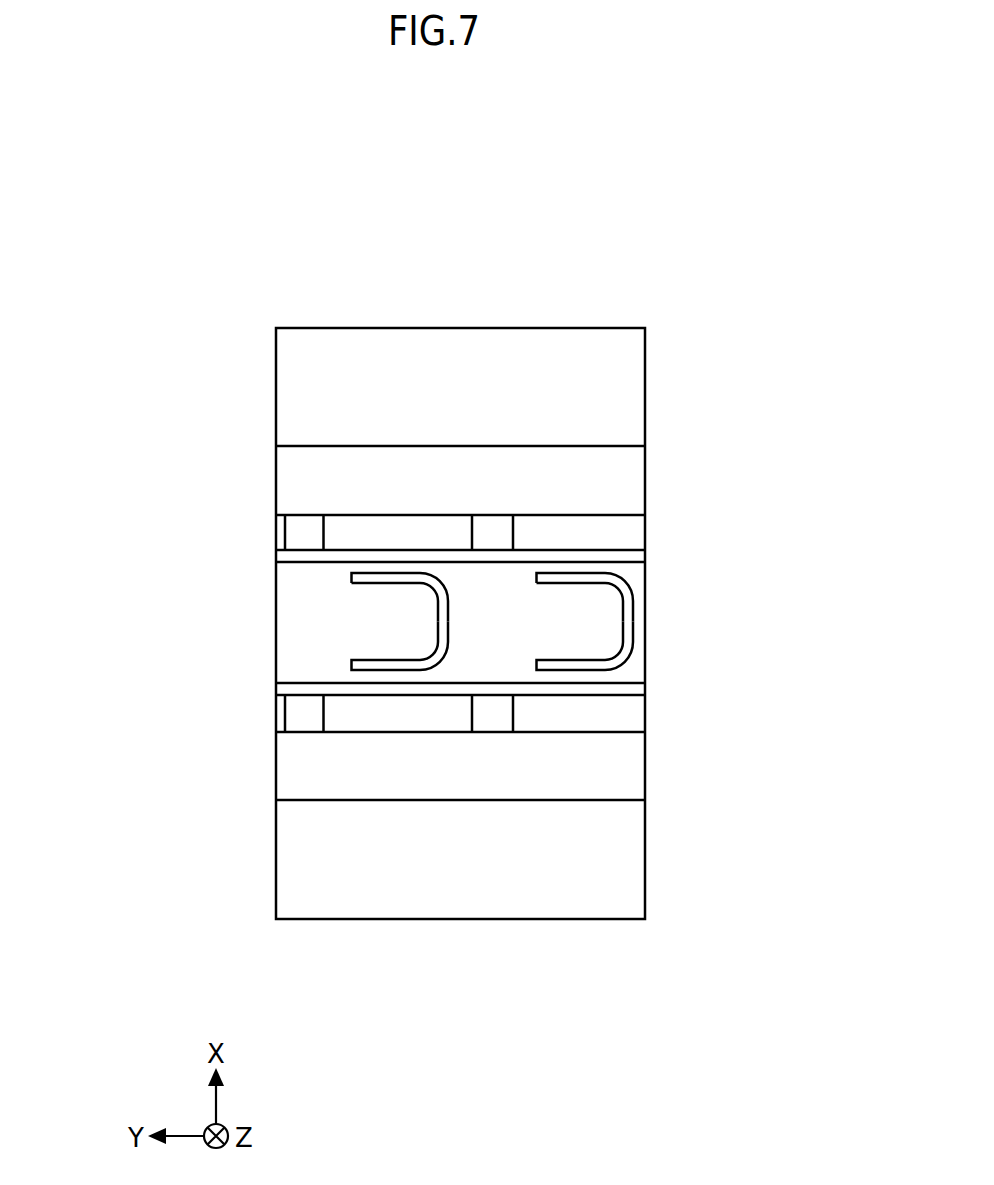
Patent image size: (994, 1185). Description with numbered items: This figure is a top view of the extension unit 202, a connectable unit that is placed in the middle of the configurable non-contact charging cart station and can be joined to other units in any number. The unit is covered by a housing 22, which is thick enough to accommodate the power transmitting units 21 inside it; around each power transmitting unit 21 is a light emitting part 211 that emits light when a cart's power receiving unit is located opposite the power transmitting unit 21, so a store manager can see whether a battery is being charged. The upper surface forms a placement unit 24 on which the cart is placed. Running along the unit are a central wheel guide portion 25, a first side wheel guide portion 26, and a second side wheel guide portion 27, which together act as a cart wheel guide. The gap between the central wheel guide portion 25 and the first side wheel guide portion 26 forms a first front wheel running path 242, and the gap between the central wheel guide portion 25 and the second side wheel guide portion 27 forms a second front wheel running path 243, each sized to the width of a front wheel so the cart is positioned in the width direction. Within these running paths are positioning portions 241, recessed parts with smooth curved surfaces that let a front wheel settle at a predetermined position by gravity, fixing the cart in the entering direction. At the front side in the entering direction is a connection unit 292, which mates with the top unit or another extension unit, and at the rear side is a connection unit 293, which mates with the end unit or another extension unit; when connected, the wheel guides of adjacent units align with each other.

The extension unit 202 is at (495, 155).
The placement unit 24 is at (712, 411).
The housing 22 is at (293, 364).
The second side wheel guide portion 27 is at (293, 476).
The second front wheel running path 243 is at (632, 531).
The central wheel guide portion 25 is at (295, 603).
The first front wheel running path 242 is at (632, 712).
The first side wheel guide portion 26 is at (622, 768).
The positioning portion 241 is at (313, 537).
The power transmitting unit 21 is at (415, 606).
The light emitting part 211 is at (410, 683).
The connection unit 292 is at (170, 622).
The connection unit 293 is at (699, 622).